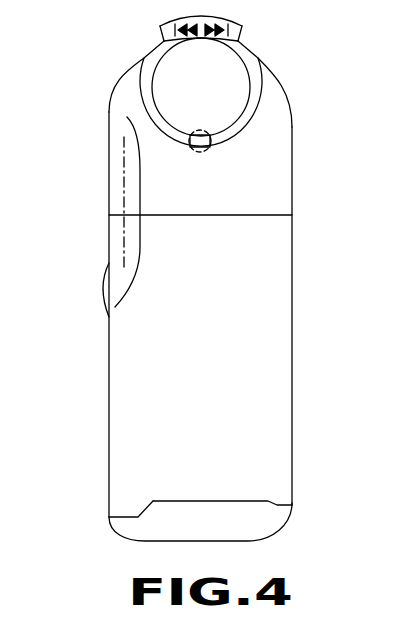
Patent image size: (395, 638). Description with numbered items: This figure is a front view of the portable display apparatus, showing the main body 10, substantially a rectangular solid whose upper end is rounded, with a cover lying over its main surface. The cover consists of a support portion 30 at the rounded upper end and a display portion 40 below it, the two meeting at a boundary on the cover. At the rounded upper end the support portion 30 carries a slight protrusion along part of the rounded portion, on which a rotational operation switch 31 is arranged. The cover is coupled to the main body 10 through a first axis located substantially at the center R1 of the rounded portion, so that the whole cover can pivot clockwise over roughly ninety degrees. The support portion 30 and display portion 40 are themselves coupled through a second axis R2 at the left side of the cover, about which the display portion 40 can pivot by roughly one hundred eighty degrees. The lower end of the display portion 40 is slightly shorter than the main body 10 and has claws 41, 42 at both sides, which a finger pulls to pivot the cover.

The main body 10 is at (255, 523).
The support portion 30 is at (119, 101).
The rotational operation switch 31 is at (243, 34).
The center of the rounded portion R1 is at (212, 138).
The second axis R2 is at (125, 160).
The display portion 40 is at (126, 362).
The claw 41 is at (122, 507).
The claw 42 is at (280, 497).